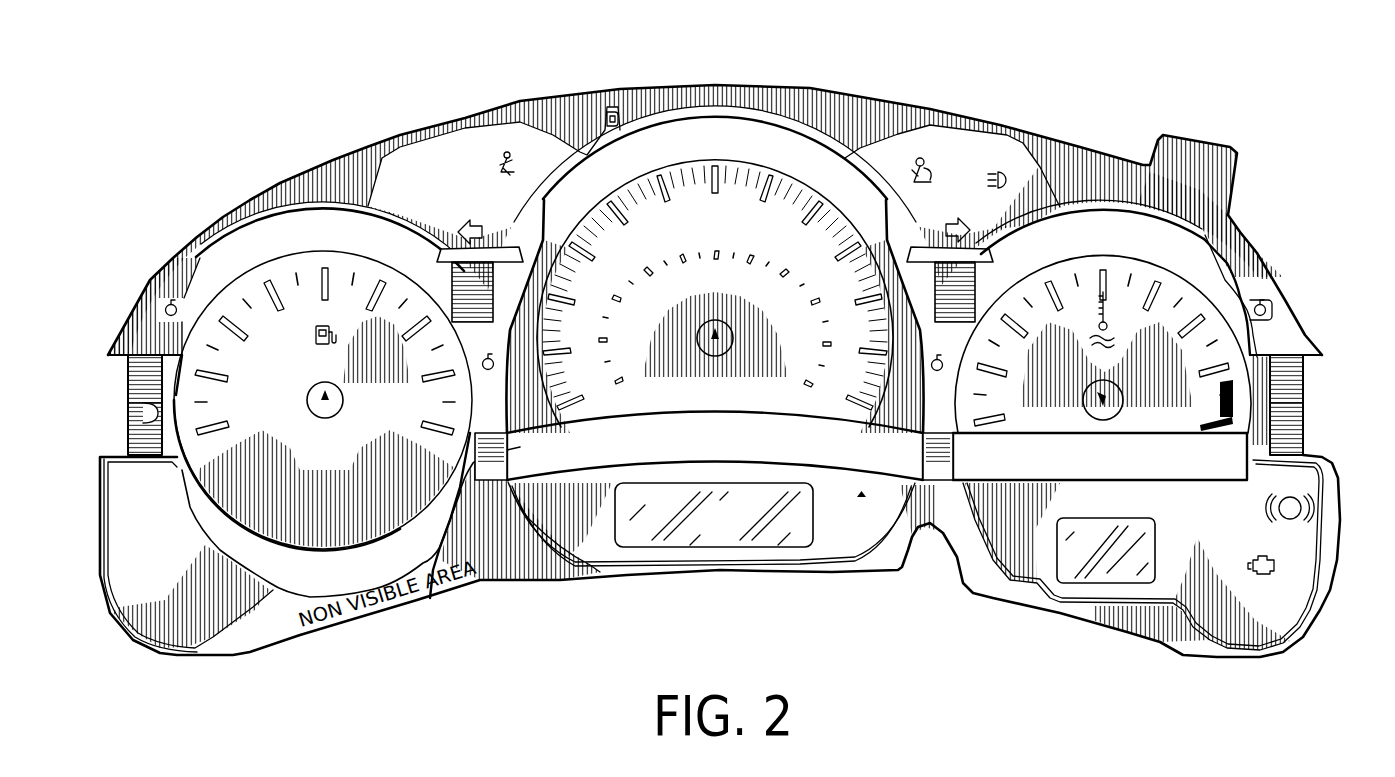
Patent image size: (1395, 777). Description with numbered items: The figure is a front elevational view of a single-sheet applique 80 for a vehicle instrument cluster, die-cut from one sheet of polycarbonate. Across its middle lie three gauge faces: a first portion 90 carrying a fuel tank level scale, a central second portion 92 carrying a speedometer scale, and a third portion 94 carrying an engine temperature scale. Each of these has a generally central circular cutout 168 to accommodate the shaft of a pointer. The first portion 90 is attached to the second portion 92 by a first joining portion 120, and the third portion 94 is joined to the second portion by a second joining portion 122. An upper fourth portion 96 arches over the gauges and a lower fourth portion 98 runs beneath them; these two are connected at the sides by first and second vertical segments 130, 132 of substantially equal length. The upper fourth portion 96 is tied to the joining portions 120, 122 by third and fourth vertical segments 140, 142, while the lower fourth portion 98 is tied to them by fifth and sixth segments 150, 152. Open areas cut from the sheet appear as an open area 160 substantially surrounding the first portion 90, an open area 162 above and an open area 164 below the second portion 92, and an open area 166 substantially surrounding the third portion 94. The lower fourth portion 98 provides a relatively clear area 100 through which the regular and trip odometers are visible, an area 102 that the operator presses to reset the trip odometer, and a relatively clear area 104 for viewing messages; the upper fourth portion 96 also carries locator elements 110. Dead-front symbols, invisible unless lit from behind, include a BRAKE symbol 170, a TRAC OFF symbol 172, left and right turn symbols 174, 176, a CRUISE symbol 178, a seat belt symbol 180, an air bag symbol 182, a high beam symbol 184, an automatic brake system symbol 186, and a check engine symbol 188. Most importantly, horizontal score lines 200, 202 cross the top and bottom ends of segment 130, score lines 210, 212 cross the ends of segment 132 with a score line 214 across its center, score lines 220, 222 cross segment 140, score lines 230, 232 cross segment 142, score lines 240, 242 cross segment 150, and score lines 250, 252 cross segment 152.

The single-sheet applique 80 is at (352, 70).
The first portion 90 is at (277, 507).
The second portion 92 is at (725, 195).
The third portion 94 is at (1082, 268).
The upper fourth portion 96 is at (1082, 170).
The lower fourth portion 98 is at (505, 580).
The relatively clear area 100 is at (705, 540).
The trip odometer reset area 102 is at (870, 530).
The relatively clear message area 104 is at (1085, 577).
The locator elements 110 is at (171, 300).
The first joining portion 120 is at (497, 340).
The second joining portion 122 is at (947, 343).
The first vertical segment 130 is at (137, 383).
The second vertical segment 132 is at (1290, 383).
The third vertical segment 140 is at (462, 302).
The fourth vertical segment 142 is at (940, 292).
The fifth segment 150 is at (437, 600).
The sixth segment 152 is at (937, 447).
The open area 160 is at (278, 240).
The open area 162 is at (710, 138).
The open area 164 is at (772, 445).
The open area 166 is at (1185, 258).
The circular cutouts 168 is at (325, 420).
The BRAKE symbol 170 is at (130, 565).
The TRAC OFF symbol 172 is at (122, 512).
The left turn symbol 174 is at (472, 222).
The right turn symbol 176 is at (960, 222).
The CRUISE symbol 178 is at (428, 165).
The seat belt symbol 180 is at (515, 165).
The air bag symbol 182 is at (918, 160).
The high beam symbol 184 is at (1000, 173).
The automatic brake system symbol 186 is at (1305, 508).
The check engine symbol 188 is at (1278, 565).
The horizontal score line 200 is at (148, 340).
The horizontal score line 202 is at (108, 460).
The horizontal score line 210 is at (1287, 350).
The horizontal score line 212 is at (1297, 442).
The horizontal score line 214 is at (1267, 437).
The horizontal score line 220 is at (452, 257).
The horizontal score line 222 is at (484, 340).
The horizontal score line 230 is at (945, 255).
The horizontal score line 232 is at (953, 310).
The horizontal score line 240 is at (145, 415).
The horizontal score line 242 is at (498, 463).
The horizontal score line 250 is at (950, 400).
The horizontal score line 252 is at (925, 470).